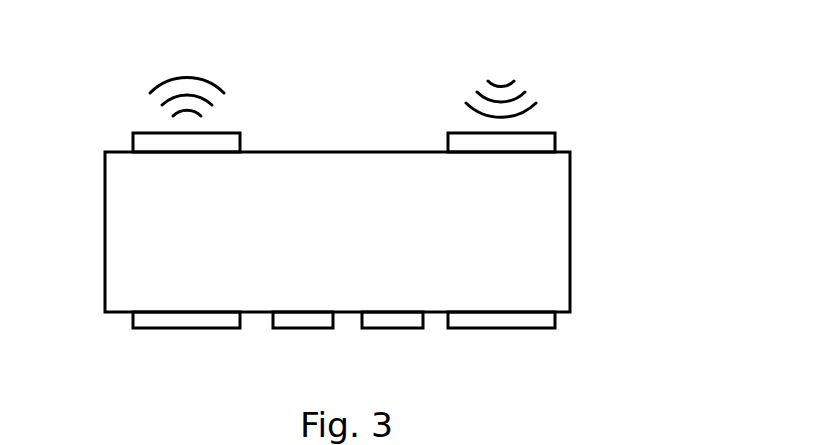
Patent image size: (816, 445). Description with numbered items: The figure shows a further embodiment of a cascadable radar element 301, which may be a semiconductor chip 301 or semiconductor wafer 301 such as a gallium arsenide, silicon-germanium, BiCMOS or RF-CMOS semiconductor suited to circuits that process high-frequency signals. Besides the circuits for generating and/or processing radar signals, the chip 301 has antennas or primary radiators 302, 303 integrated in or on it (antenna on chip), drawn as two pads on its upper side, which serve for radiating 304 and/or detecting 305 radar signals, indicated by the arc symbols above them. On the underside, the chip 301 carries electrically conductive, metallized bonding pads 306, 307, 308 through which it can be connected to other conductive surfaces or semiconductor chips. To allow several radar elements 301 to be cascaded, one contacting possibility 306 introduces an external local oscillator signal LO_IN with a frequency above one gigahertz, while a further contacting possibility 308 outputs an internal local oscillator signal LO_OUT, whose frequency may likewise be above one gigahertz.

The radar element 301 is at (570, 228).
The primary radiator 302 is at (150, 133).
The primary radiator 303 is at (537, 133).
The radiating 304 is at (165, 72).
The detecting 305 is at (505, 73).
The bonding pad 306 is at (173, 328).
The bonding pad 307 is at (415, 328).
The bonding pad 308 is at (502, 328).